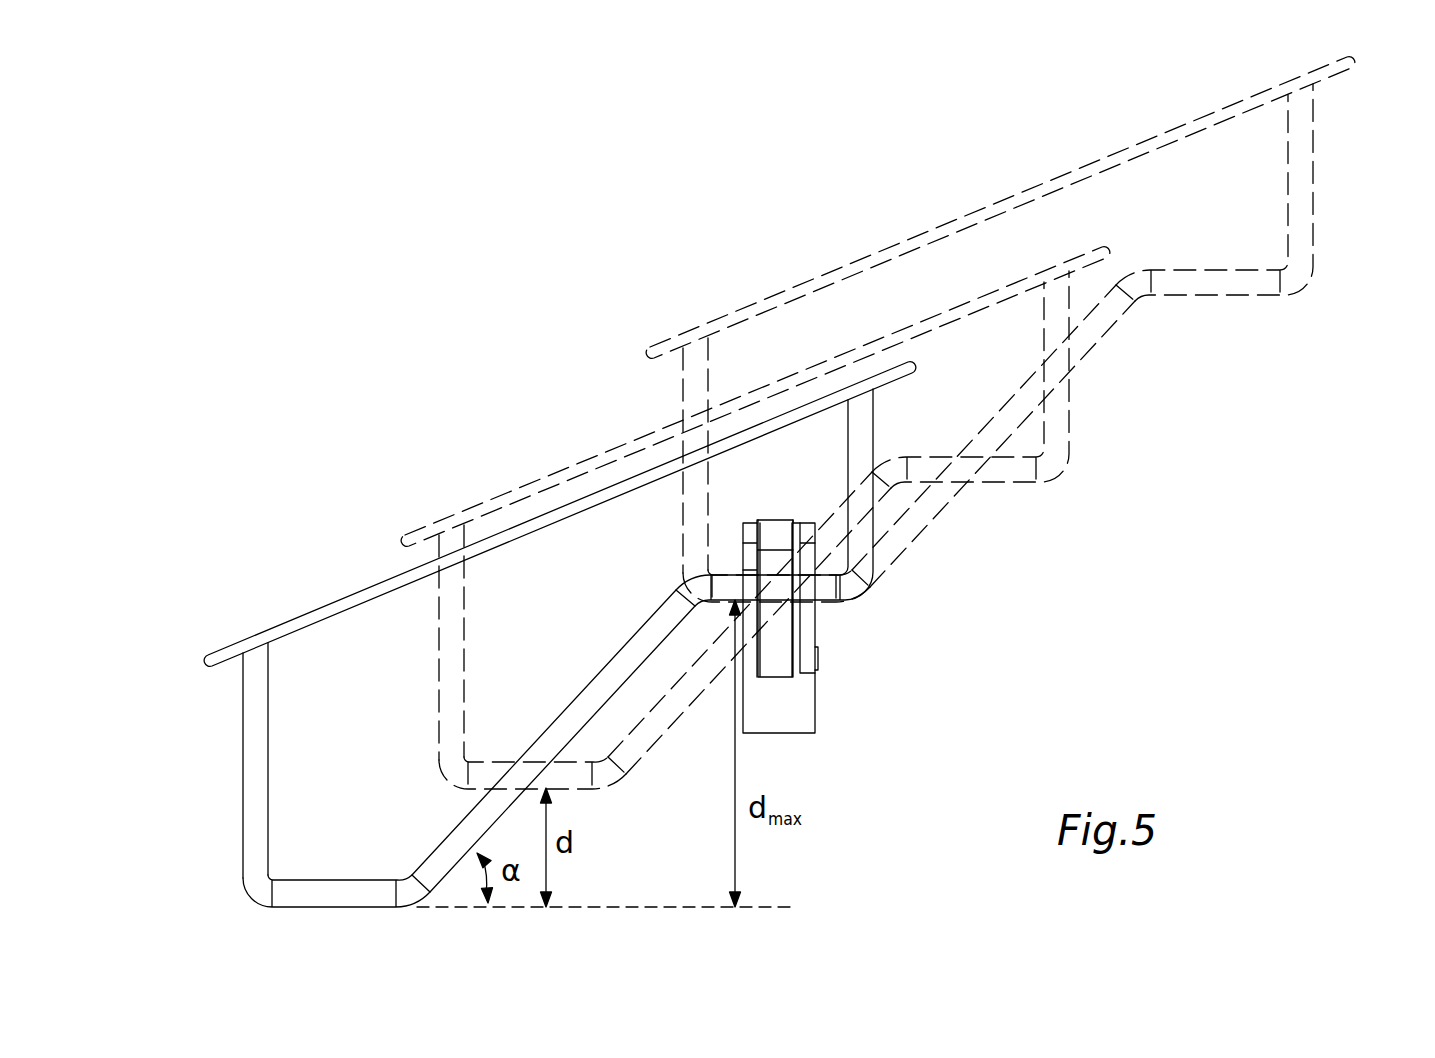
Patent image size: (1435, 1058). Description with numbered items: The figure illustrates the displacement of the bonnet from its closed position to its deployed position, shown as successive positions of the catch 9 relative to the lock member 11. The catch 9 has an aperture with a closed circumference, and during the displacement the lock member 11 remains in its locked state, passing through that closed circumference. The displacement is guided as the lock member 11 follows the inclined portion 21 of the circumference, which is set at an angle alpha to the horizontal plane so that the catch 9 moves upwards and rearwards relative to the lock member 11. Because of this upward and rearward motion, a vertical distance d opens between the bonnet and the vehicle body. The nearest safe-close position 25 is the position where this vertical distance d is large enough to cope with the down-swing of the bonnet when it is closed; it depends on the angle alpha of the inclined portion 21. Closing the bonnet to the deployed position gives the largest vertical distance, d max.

The catch 9 is at (258, 584).
The inclined portion 21 is at (594, 701).
The nearest safe-close position 25 is at (418, 706).
The lock member 11 is at (785, 693).